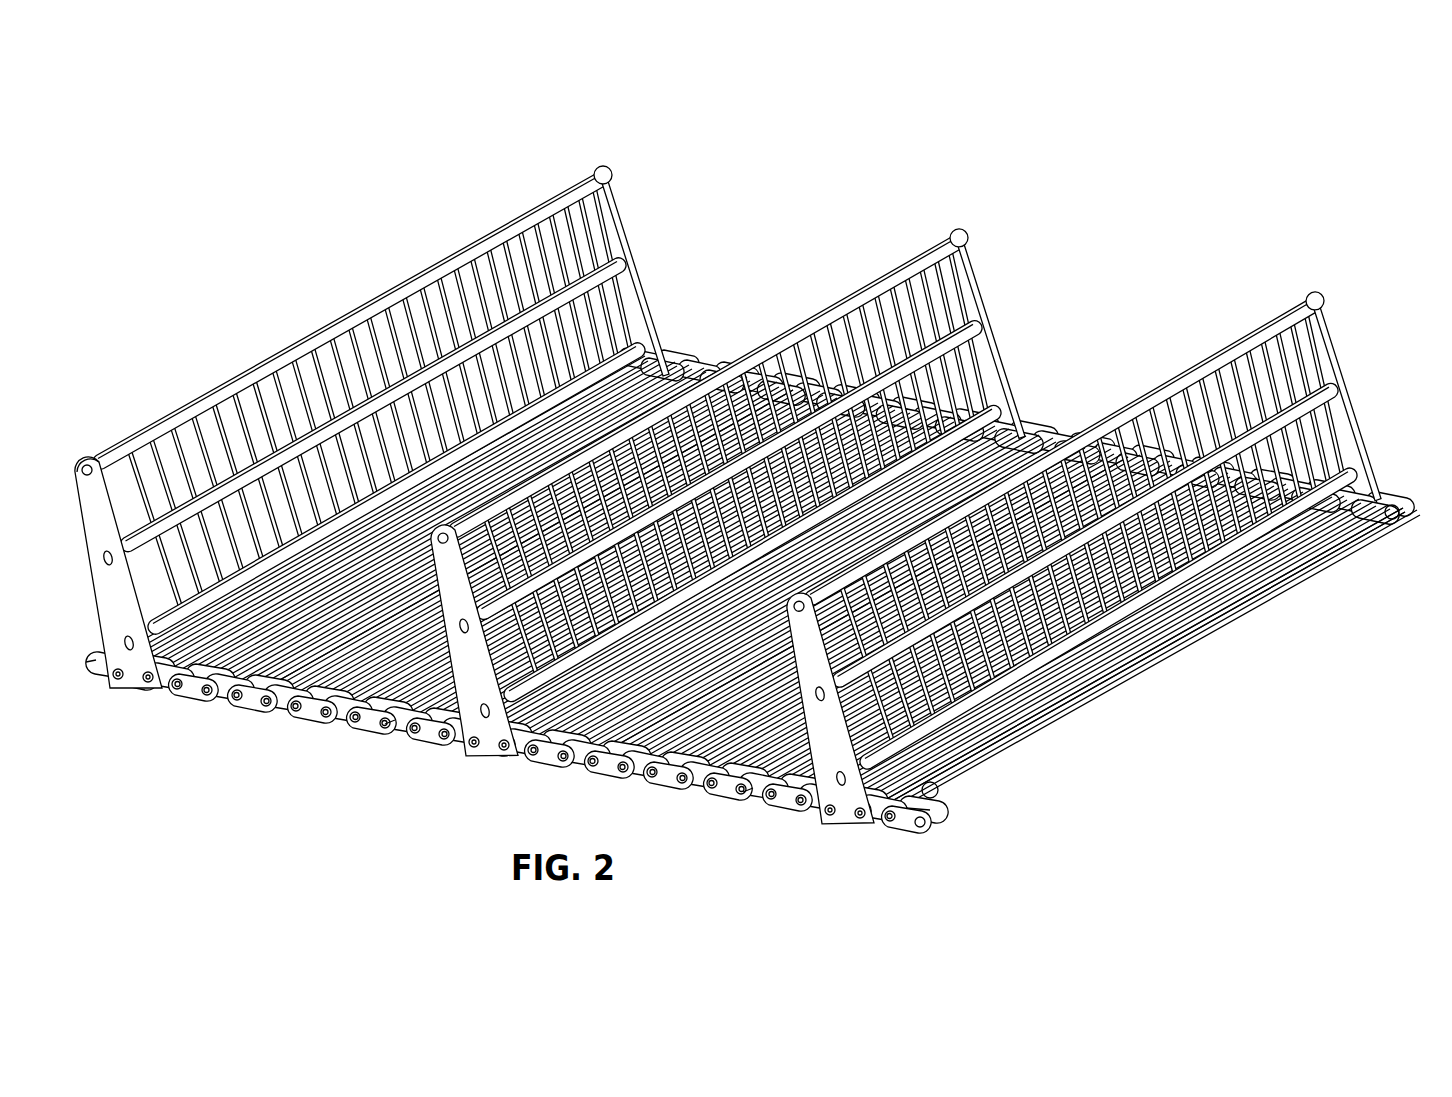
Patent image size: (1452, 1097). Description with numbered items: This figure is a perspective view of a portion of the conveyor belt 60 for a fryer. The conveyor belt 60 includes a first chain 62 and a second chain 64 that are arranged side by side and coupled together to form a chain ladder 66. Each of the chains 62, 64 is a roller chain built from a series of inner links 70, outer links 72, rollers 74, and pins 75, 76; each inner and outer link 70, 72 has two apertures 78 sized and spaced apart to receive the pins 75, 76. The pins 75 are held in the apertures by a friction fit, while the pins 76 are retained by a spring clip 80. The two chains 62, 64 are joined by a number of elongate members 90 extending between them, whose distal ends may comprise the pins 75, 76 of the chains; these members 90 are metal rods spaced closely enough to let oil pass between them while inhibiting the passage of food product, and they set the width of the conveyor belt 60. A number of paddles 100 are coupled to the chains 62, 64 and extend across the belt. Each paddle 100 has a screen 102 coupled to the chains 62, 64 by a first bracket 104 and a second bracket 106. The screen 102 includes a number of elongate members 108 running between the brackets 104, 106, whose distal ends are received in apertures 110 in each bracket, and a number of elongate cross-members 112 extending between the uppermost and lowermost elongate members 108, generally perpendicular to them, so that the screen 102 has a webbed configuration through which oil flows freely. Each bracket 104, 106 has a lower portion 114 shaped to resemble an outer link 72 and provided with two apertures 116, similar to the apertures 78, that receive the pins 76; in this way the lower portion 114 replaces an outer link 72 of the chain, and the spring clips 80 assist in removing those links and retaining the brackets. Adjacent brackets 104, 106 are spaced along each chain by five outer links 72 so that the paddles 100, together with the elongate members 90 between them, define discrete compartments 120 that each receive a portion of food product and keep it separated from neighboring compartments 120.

The conveyor belt 60 is at (740, 501).
The first chain 62 is at (938, 800).
The second chain 64 is at (1403, 534).
The chain ladder 66 is at (1185, 634).
The inner links 70 is at (415, 741).
The outer links 72 is at (385, 724).
The rollers 74 is at (918, 823).
The pins 75 is at (210, 696).
The pins 76 is at (476, 743).
The apertures 78 is at (97, 673).
The spring clip 80 is at (118, 681).
The elongate members 90 is at (330, 637).
The paddles 100 is at (720, 474).
The screen 102 is at (511, 227).
The first bracket 104 is at (95, 456).
The second bracket 106 is at (627, 232).
The elongate members 108 is at (433, 372).
The apertures 110 is at (113, 572).
The elongate cross-members 112 is at (255, 440).
The lower portion 114 is at (122, 681).
The apertures 116 is at (160, 685).
The compartments 120 is at (920, 332).